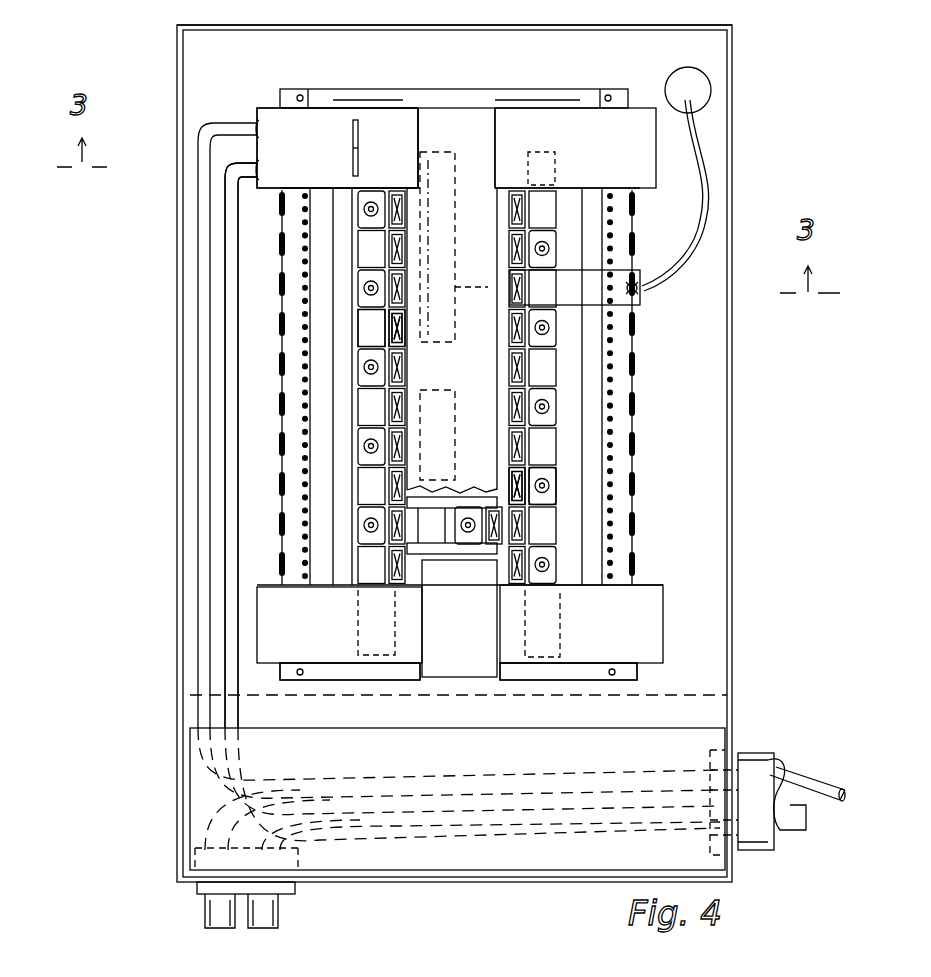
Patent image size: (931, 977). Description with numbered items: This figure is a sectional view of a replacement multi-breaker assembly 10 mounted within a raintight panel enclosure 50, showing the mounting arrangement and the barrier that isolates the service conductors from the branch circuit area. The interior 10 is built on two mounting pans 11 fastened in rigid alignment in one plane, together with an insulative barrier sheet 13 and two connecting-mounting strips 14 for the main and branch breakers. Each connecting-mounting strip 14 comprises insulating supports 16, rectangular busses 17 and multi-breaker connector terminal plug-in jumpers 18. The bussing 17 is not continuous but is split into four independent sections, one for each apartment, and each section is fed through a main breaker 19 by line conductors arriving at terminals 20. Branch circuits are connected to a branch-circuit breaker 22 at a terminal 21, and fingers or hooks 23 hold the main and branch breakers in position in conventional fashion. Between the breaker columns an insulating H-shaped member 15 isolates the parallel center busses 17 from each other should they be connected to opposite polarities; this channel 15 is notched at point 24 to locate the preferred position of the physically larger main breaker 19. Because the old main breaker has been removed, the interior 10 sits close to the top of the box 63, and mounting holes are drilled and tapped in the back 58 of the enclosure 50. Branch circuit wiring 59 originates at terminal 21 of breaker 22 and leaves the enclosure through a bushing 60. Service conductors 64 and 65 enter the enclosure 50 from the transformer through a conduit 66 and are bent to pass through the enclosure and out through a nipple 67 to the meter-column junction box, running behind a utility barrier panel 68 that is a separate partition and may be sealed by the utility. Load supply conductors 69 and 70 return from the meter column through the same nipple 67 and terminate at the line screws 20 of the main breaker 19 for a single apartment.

The replacement multi-breaker assembly 10 is at (629, 82).
The mounting pan 11 is at (318, 89).
The insulative barrier sheet 13 is at (546, 682).
The connecting-mounting strip 14 is at (346, 501).
The insulating H-shaped member 15 is at (495, 123).
The insulating support 16 is at (360, 340).
The rectangular bus 17 is at (357, 256).
The multi-breaker connector terminal plug-in jumper 18 is at (360, 540).
The main breaker 19 is at (268, 108).
The terminal 20 is at (282, 168).
The terminal 21 is at (650, 288).
The branch-circuit breaker 22 is at (638, 270).
The finger or hook 23 is at (640, 362).
The notch 24 is at (419, 128).
The enclosure 50 is at (747, 131).
The back 58 is at (705, 46).
The branch circuit wiring 59 is at (703, 173).
The bushing 60 is at (708, 78).
The top of box 63 is at (715, 24).
The service conductor 64 is at (208, 910).
The service conductor 65 is at (272, 923).
The conduit 66 is at (200, 888).
The nipple 67 is at (765, 757).
The utility barrier panel 68 is at (697, 728).
The load supply conductor 69 is at (203, 378).
The load supply conductor 70 is at (228, 410).